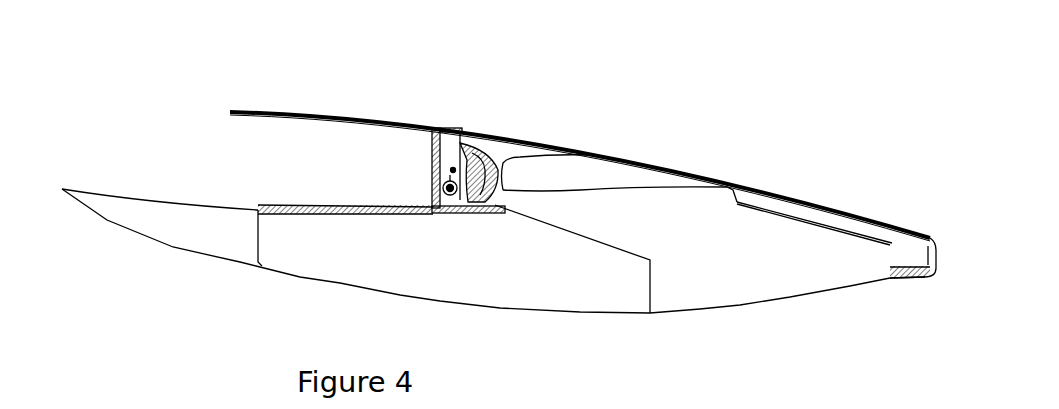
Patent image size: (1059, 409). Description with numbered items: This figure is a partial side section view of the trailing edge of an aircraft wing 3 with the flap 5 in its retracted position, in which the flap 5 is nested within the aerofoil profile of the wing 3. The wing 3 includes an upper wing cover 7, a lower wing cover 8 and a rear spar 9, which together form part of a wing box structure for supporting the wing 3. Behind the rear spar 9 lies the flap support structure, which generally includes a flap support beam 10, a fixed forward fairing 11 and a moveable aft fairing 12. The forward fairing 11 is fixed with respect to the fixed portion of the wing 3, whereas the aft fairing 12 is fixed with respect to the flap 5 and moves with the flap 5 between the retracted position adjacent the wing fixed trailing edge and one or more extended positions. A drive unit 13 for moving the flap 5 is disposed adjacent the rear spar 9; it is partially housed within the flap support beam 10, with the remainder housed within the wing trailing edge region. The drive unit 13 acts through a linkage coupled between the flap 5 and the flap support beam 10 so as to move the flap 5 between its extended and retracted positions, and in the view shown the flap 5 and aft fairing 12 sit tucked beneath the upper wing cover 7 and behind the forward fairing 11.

The wing 3 is at (255, 82).
The flap 5 is at (655, 177).
The upper wing cover 7 is at (343, 115).
The lower wing cover 8 is at (323, 218).
The rear spar 9 is at (440, 162).
The flap support beam 10 is at (573, 290).
The fixed forward fairing 11 is at (198, 227).
The moveable aft fairing 12 is at (760, 269).
The drive unit 13 is at (502, 146).